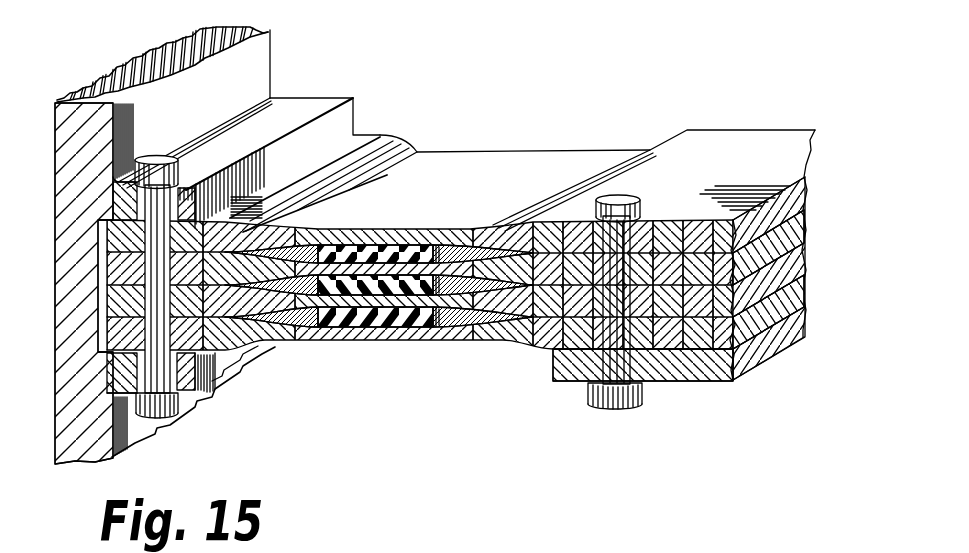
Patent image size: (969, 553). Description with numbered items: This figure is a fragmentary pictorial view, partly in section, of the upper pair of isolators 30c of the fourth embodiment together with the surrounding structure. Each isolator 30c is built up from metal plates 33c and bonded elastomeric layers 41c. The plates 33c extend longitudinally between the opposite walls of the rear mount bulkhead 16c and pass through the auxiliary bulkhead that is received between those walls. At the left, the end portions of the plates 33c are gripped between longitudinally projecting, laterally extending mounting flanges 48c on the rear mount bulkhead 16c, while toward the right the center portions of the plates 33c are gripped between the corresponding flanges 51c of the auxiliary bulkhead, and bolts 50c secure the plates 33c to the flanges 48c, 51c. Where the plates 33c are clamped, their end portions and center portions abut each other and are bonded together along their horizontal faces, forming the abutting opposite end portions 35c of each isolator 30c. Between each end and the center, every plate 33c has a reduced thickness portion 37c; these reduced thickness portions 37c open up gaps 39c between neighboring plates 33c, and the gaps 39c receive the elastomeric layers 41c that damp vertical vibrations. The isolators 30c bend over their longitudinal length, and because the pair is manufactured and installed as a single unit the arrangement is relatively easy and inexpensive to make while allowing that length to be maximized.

The rear mount bulkhead 16c is at (58, 122).
The isolator 30c is at (400, 356).
The metal plate 33c is at (533, 145).
The abutting opposite end portion 35c is at (357, 122).
The reduced thickness portion 37c is at (372, 337).
The gap 39c is at (299, 338).
The elastomeric layer 41c is at (403, 243).
The mounting flange 48c is at (187, 165).
The bolt 50c is at (246, 170).
The flange 51c is at (668, 375).